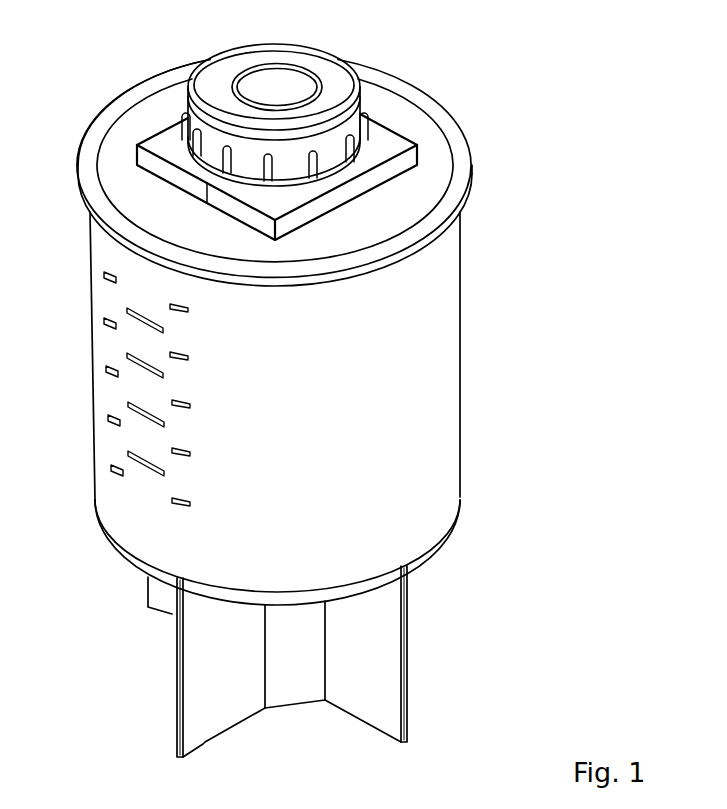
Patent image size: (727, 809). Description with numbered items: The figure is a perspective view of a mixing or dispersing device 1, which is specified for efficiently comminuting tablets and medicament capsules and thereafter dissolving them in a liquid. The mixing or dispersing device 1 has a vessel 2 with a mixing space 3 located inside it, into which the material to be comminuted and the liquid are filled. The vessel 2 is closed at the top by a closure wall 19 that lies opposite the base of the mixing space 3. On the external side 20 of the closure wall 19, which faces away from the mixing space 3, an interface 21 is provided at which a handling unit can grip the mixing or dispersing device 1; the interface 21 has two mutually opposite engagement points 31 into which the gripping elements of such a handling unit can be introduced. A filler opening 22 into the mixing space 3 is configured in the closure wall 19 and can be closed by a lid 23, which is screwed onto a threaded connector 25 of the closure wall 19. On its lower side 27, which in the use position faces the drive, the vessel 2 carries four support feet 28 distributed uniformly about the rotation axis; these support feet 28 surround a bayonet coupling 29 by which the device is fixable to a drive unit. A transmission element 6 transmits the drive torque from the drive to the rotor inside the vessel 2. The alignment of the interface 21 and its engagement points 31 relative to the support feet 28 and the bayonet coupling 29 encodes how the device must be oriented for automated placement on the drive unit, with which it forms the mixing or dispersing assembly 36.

The mixing or dispersing device 1 is at (360, 404).
The vessel 2 is at (355, 408).
The mixing space 3 is at (442, 450).
The transmission element 6 is at (290, 681).
The closure wall 19 is at (300, 164).
The external side 20 is at (390, 110).
The interface 21 is at (238, 157).
The filler opening 22 is at (268, 93).
The lid 23 is at (211, 98).
The threaded connector 25 is at (271, 156).
The lower side 27 is at (140, 575).
The support feet 28 is at (184, 690).
The bayonet coupling 29 is at (283, 710).
The engagement points 31 is at (163, 125).
The mixing or dispersing assembly 36 is at (617, 194).